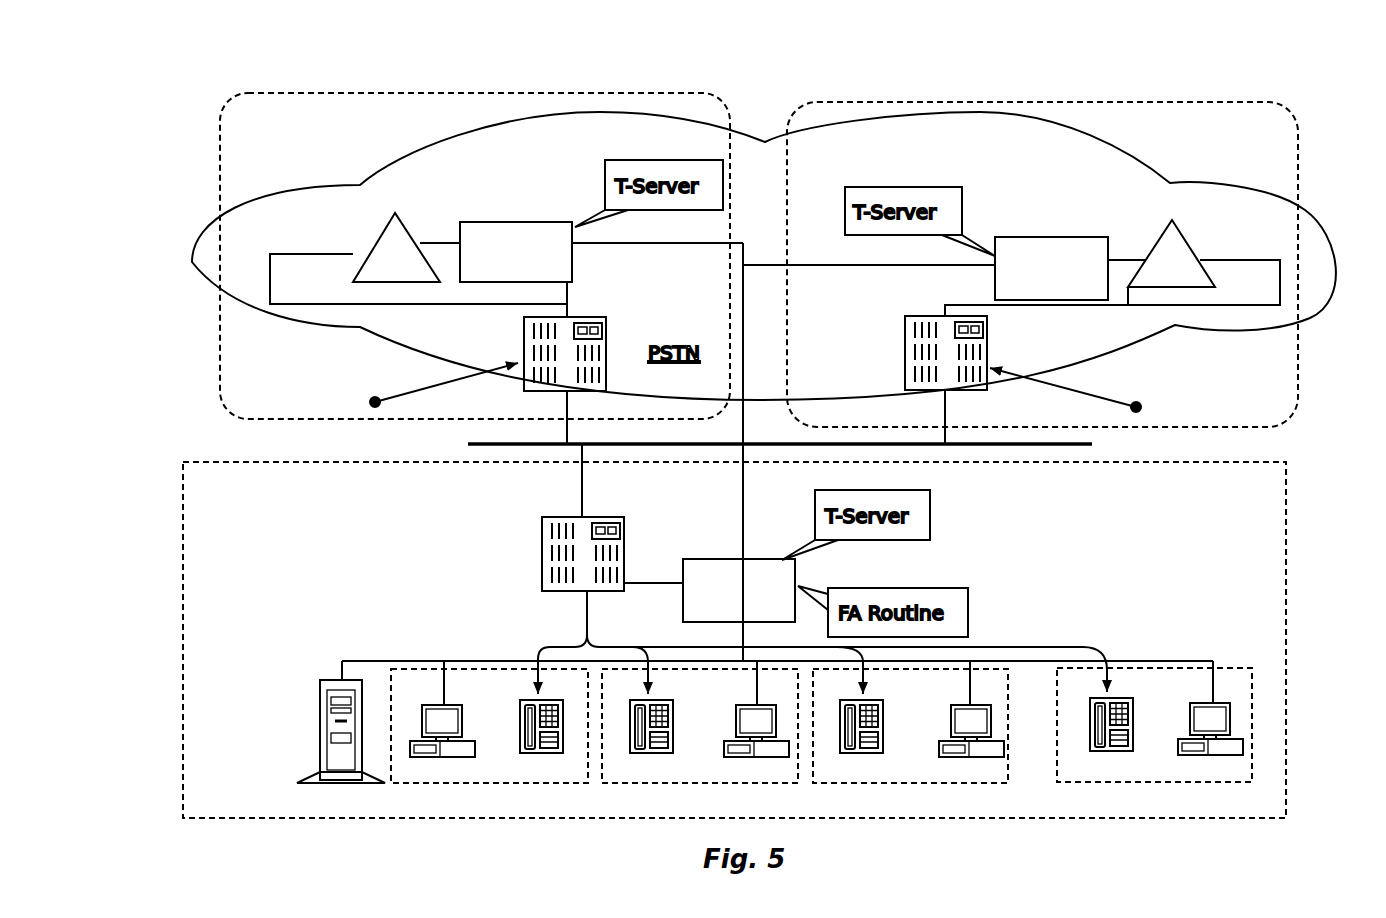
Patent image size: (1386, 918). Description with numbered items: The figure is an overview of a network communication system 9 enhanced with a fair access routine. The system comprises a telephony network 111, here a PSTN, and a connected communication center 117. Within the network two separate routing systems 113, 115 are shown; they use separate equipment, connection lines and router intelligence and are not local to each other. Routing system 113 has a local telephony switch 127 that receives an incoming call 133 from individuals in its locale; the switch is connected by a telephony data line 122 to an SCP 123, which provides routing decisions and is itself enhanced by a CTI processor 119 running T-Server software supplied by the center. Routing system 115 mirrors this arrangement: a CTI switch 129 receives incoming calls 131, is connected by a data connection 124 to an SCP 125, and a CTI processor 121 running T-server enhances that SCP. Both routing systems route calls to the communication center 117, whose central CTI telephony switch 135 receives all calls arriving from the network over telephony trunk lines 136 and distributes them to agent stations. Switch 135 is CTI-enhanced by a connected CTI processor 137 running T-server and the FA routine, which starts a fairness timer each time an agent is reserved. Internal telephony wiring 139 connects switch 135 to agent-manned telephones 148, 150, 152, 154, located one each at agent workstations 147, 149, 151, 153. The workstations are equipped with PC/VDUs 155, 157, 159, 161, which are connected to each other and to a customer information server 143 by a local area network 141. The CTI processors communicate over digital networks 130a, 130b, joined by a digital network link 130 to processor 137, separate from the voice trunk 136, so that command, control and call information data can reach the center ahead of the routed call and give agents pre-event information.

The network communication system 9 is at (738, 232).
The telephony network 111 is at (195, 237).
The routing system 113 is at (538, 88).
The routing system 115 is at (1207, 97).
The communication center 117 is at (1310, 586).
The CTI processor 119 is at (525, 222).
The CTI processor 121 is at (1035, 237).
The telephony data line 122 is at (505, 305).
The SCP 123 is at (375, 247).
The data connection 124 is at (1127, 308).
The SCP 125 is at (1188, 248).
The local telephony switch 127 is at (607, 352).
The CTI switch 129 is at (905, 372).
The digital data network link 130 is at (738, 393).
The digital network 130a is at (665, 243).
The digital network 130b is at (843, 265).
The incoming calls 131 is at (1105, 395).
The incoming call 133 is at (400, 395).
The CTI telephony switch 135 is at (542, 562).
The telephony trunk lines 136 is at (913, 446).
The CTI processor 137 is at (730, 559).
The internal telephony wiring 139 is at (582, 602).
The local area network 141 is at (1123, 656).
The customer information server 143 is at (320, 745).
The agent workstation 147 is at (489, 744).
The agent-manned telephone 148 is at (520, 730).
The agent workstation 149 is at (700, 744).
The agent-manned telephone 150 is at (672, 725).
The agent workstation 151 is at (910, 744).
The agent-manned telephone 152 is at (883, 725).
The agent workstation 153 is at (1152, 741).
The agent-manned telephone 154 is at (1132, 725).
The agent computer 155 is at (420, 757).
The agent computer 157 is at (765, 757).
The agent computer 159 is at (978, 757).
The agent computer 161 is at (1210, 755).